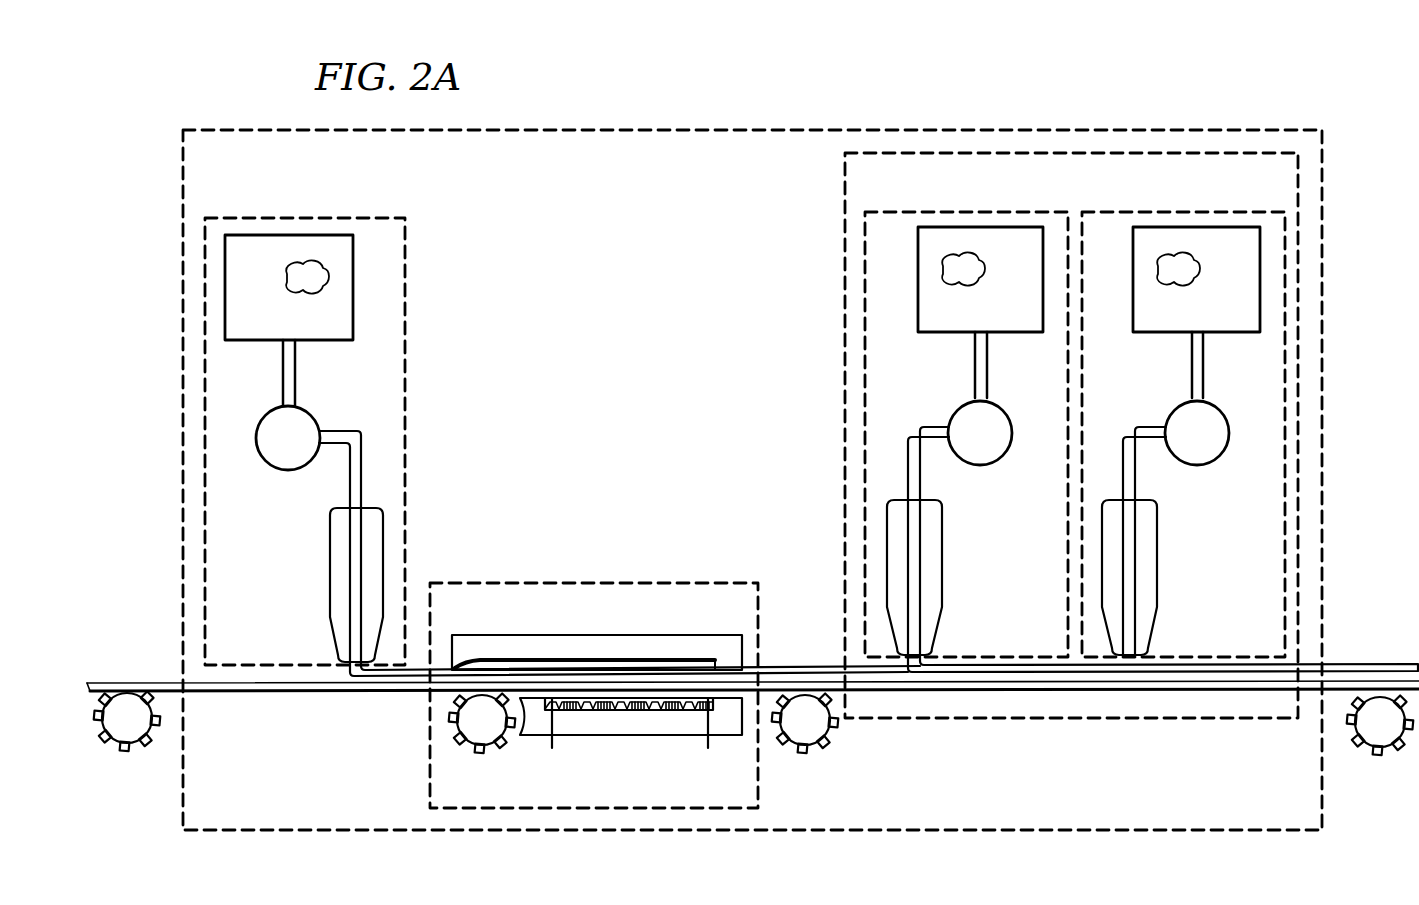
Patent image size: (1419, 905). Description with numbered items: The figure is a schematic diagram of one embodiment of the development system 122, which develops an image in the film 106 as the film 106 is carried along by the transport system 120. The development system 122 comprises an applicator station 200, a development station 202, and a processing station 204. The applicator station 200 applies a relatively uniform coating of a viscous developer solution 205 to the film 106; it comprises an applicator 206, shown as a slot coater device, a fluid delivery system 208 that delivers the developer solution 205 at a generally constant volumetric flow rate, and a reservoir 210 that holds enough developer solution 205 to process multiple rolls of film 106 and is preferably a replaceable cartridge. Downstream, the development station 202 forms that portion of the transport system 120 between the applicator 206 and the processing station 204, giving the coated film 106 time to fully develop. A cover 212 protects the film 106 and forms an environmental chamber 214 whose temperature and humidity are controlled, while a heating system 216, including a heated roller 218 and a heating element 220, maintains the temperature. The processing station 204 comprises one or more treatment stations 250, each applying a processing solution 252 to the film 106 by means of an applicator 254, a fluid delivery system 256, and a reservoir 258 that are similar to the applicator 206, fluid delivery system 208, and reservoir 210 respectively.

The film 106 is at (142, 682).
The transport system 120 is at (126, 745).
The development system 122 is at (765, 129).
The applicator station 200 is at (406, 263).
The development station 202 is at (596, 582).
The processing station 204 is at (304, 284).
The developer solution 205 is at (404, 680).
The applicator 206 is at (331, 562).
The fluid delivery system 208 is at (274, 456).
The reservoir 210 is at (336, 342).
The cover 212 is at (482, 644).
The environmental chamber 214 is at (651, 666).
The heating system 216 is at (582, 711).
The heated roller 218 is at (484, 747).
The heating element 220 is at (648, 712).
The treatment station 250 is at (984, 210).
The processing solution 252 is at (968, 277).
The applicator 254 is at (942, 552).
The fluid delivery system 256 is at (997, 451).
The reservoir 258 is at (937, 334).